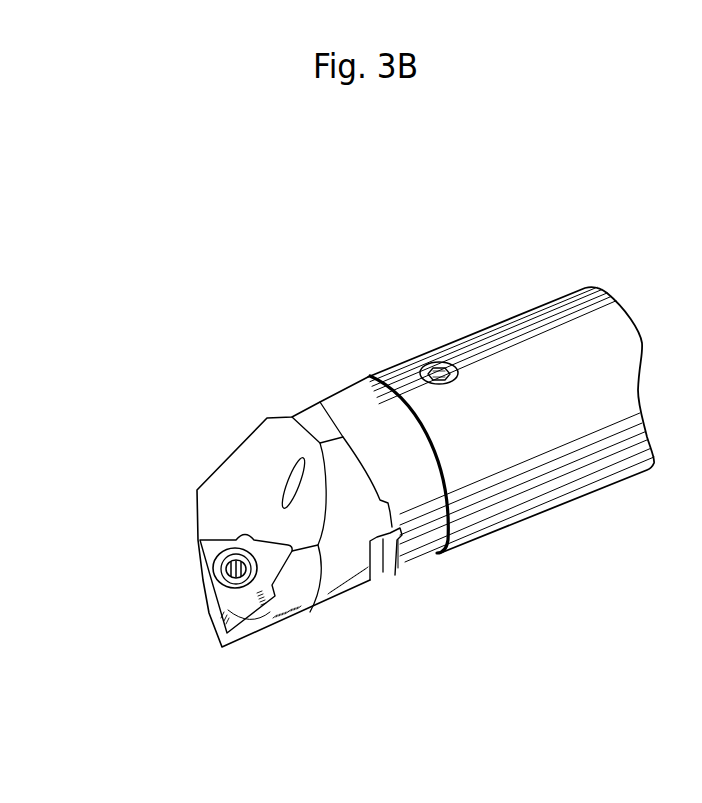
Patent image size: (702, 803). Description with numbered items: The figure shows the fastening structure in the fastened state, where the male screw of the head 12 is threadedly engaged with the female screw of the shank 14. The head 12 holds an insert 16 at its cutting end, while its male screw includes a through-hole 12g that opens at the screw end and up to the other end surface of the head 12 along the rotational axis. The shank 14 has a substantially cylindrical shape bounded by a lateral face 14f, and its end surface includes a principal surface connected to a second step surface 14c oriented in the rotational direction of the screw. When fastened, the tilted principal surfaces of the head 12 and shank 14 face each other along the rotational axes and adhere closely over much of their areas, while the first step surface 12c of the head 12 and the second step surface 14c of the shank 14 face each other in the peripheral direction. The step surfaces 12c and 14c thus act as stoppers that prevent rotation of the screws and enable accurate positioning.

The head 12 is at (238, 386).
The first step surface 12c is at (375, 573).
The through-hole 12g is at (292, 456).
The shank 14 is at (433, 285).
The second step surface 14c is at (398, 542).
The lateral face 14f is at (492, 352).
The insert 16 is at (236, 600).